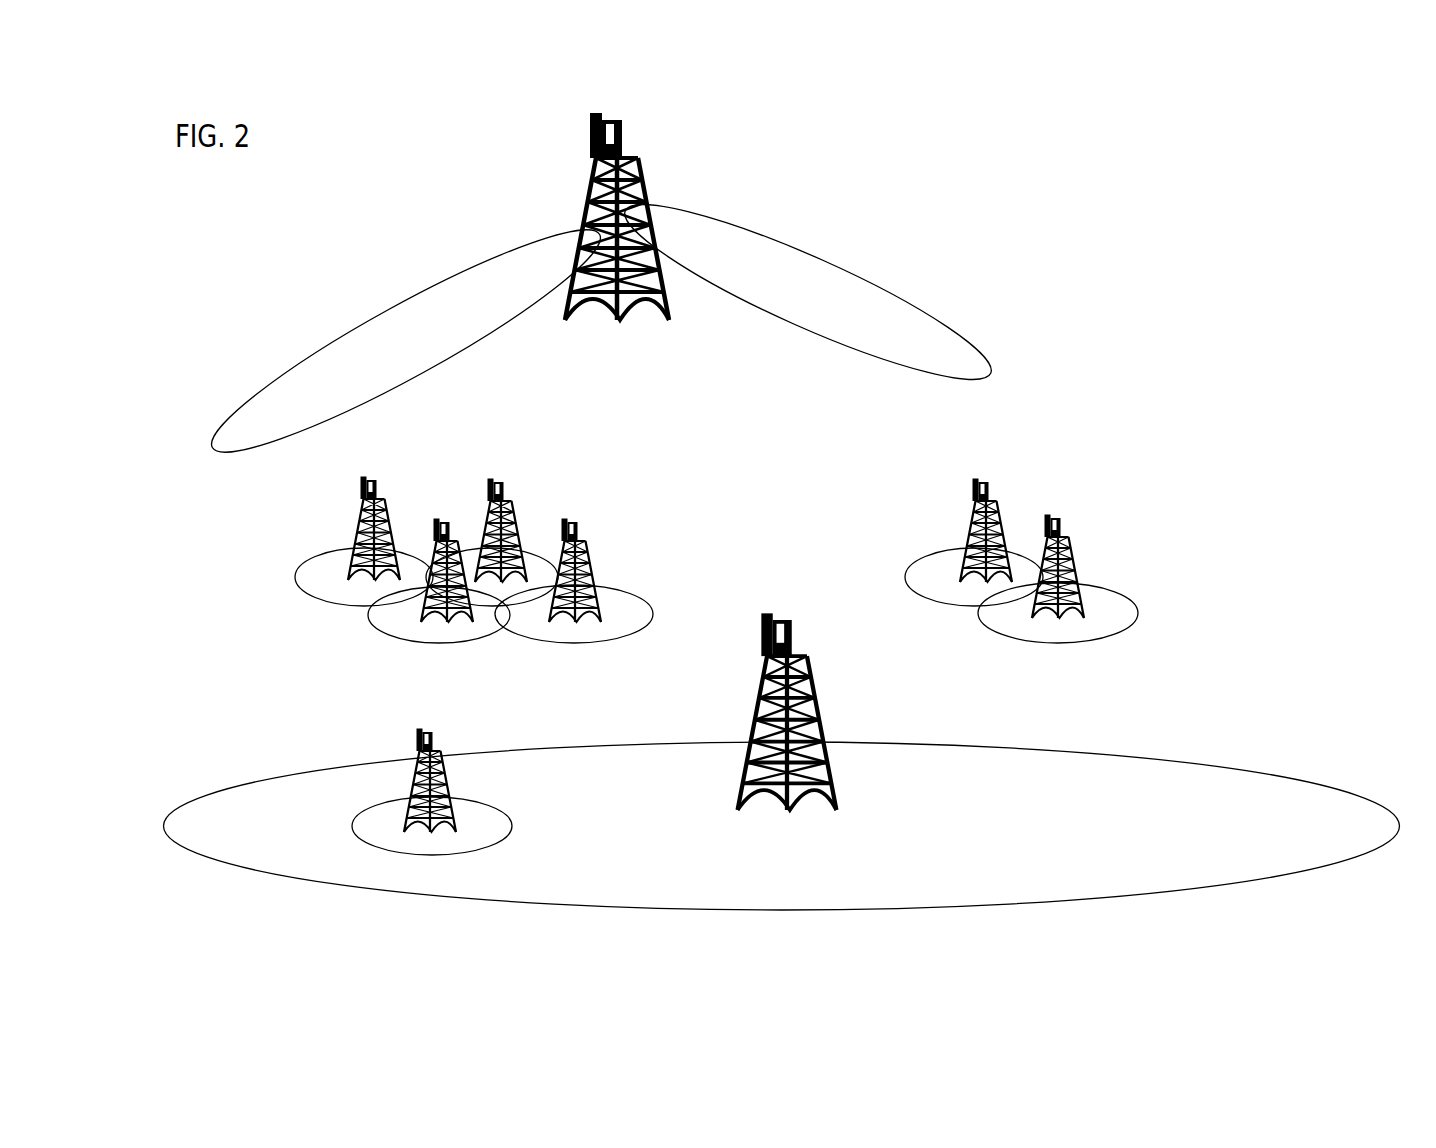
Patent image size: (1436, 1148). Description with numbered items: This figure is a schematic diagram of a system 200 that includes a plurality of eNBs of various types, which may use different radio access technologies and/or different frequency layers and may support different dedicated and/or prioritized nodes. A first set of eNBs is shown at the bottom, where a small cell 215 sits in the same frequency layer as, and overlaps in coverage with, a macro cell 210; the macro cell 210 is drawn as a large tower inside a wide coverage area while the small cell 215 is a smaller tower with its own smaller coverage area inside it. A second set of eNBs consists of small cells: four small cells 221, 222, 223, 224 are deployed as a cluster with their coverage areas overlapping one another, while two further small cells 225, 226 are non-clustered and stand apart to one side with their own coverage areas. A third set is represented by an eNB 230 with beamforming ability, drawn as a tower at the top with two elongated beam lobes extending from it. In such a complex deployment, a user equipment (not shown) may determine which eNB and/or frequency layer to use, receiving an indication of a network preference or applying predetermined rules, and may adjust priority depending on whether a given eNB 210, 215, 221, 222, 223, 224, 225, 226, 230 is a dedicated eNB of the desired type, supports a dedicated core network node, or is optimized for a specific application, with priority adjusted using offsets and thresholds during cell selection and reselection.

The system 200 is at (1295, 152).
The macro cell 210 is at (790, 620).
The small cell 215 is at (433, 728).
The small cell 221 is at (378, 478).
The small cell 222 is at (452, 514).
The small cell 223 is at (503, 478).
The small cell 224 is at (575, 517).
The non-clustered small cell 225 is at (990, 478).
The non-clustered small cell 226 is at (1063, 515).
The eNB with beamforming ability 230 is at (620, 122).